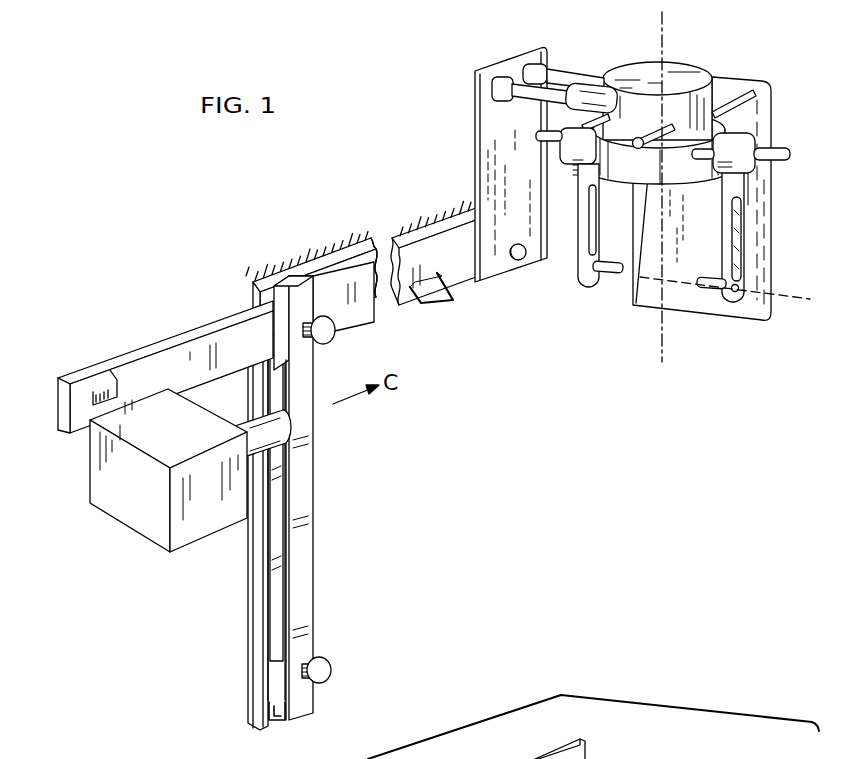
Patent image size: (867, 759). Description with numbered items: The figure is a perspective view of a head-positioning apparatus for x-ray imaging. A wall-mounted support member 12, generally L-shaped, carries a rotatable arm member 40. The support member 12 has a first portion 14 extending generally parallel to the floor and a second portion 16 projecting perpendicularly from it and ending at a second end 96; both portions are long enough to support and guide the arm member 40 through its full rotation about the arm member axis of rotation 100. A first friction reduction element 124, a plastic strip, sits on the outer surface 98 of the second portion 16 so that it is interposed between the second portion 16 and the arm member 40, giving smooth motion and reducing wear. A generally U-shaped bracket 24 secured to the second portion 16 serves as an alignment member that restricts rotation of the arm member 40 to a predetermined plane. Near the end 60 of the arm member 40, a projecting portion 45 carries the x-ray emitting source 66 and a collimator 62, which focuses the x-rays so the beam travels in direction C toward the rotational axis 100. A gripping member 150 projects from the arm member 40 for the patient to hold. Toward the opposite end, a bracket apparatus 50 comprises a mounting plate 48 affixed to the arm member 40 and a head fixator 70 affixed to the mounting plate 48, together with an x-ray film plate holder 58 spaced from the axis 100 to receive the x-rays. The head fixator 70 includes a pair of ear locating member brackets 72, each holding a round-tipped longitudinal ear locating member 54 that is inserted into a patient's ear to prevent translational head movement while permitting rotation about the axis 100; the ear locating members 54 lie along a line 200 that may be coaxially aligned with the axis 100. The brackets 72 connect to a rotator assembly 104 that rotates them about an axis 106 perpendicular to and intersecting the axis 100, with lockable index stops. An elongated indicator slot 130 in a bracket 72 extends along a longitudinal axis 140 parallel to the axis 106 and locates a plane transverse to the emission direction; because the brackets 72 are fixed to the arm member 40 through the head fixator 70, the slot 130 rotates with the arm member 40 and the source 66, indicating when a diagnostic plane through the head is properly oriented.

The support member 12 is at (276, 544).
The first portion 14 is at (400, 227).
The second portion 16 is at (252, 556).
The U-shaped bracket 24 is at (347, 479).
The arm member 40 is at (345, 287).
The projecting portion 45 is at (87, 422).
The mounting plate 48 is at (477, 145).
The bracket apparatus 50 is at (488, 178).
The ear locating member 54 is at (612, 273).
The x-ray film plate holder 58 is at (755, 263).
The end 60 is at (146, 391).
The collimator 62 is at (280, 425).
The x-ray emitting source 66 is at (128, 505).
The head fixator 70 is at (683, 54).
The ear locating member bracket 72 is at (580, 283).
The second end 96 is at (273, 723).
The outer surface 98 is at (270, 681).
The axis of rotation 100 is at (558, 258).
The rotator assembly 104 is at (651, 275).
The axis 106 is at (660, 40).
The first friction reduction element 124 is at (273, 593).
The indicator slot 130 is at (745, 235).
The longitudinal axis 140 is at (736, 315).
The gripping member 150 is at (455, 300).
The line 200 is at (793, 298).